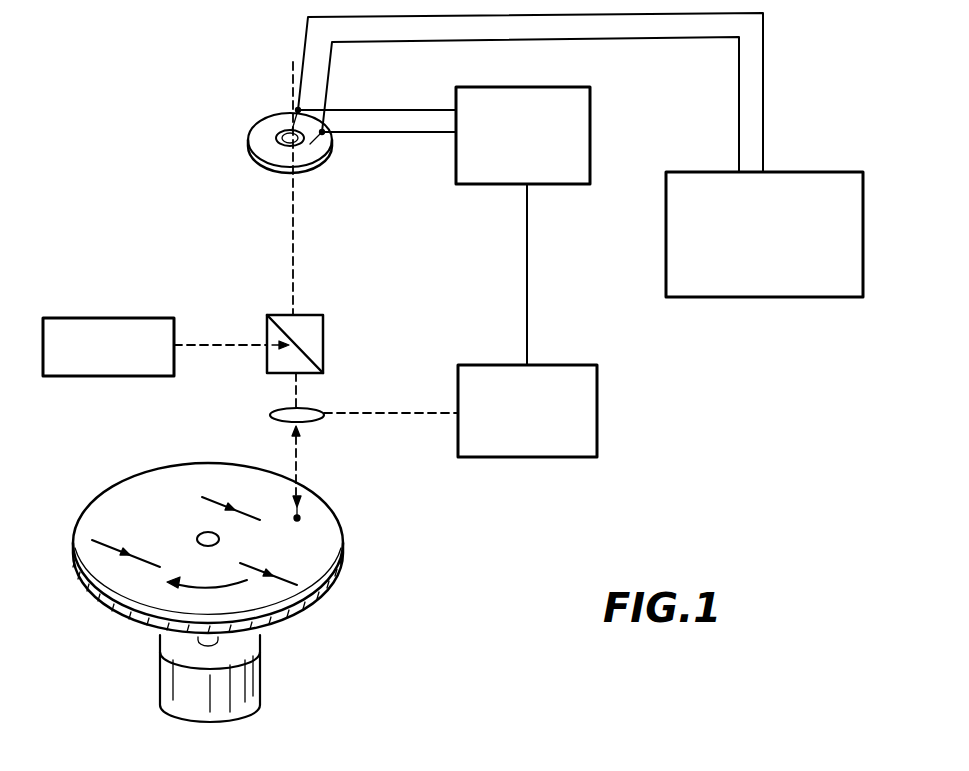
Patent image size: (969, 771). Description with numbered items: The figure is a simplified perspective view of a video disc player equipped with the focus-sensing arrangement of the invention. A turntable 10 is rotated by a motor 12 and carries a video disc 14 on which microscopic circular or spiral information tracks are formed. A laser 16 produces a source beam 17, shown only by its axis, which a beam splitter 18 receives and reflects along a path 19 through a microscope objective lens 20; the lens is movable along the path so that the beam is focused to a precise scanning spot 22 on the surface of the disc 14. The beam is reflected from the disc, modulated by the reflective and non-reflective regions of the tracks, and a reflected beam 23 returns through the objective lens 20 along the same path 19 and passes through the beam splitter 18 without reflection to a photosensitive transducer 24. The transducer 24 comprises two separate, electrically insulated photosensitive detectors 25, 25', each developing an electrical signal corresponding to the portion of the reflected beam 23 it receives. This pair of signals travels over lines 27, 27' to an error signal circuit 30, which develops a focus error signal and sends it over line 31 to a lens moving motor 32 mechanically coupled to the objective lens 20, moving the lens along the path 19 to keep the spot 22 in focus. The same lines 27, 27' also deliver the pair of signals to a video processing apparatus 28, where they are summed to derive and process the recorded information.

The turntable 10 is at (231, 554).
The motor 12 is at (250, 686).
The video disc 14 is at (231, 548).
The laser 16 is at (143, 320).
The source beam 17 is at (225, 346).
The beam splitter 18 is at (312, 315).
The path 19 is at (299, 390).
The microscope objective lens 20 is at (270, 418).
The scanning spot 22 is at (298, 518).
The reflected beam 23 is at (297, 243).
The photosensitive transducer 24 is at (293, 150).
The photosensitive detector 25 is at (272, 167).
The photosensitive detector 25' is at (335, 146).
The line 27 is at (530, 92).
The line 27' is at (530, 104).
The video processing apparatus 28 is at (697, 180).
The error signal circuit 30 is at (563, 95).
The line 31 is at (527, 277).
The lens moving motor 32 is at (593, 338).